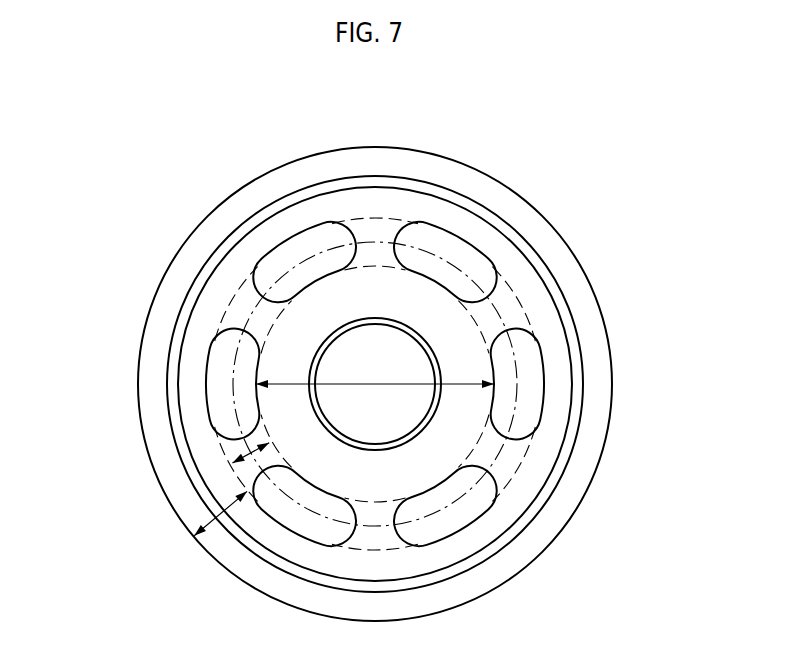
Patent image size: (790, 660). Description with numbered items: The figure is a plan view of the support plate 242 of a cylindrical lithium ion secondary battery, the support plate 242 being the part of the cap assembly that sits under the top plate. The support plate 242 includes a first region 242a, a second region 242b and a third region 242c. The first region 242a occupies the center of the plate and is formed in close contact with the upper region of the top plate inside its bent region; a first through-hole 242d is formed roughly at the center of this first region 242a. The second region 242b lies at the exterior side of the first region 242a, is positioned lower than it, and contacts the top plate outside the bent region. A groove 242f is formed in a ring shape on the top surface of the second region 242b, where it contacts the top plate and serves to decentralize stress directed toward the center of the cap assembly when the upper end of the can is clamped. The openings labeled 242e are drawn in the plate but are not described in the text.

The support plate 242 is at (44, 124).
The first region 242a is at (285, 386).
The second region 242b is at (207, 525).
The third region 242c is at (234, 463).
The first through-hole 242d is at (372, 358).
The slot 242e is at (451, 250).
The groove 242f is at (576, 390).